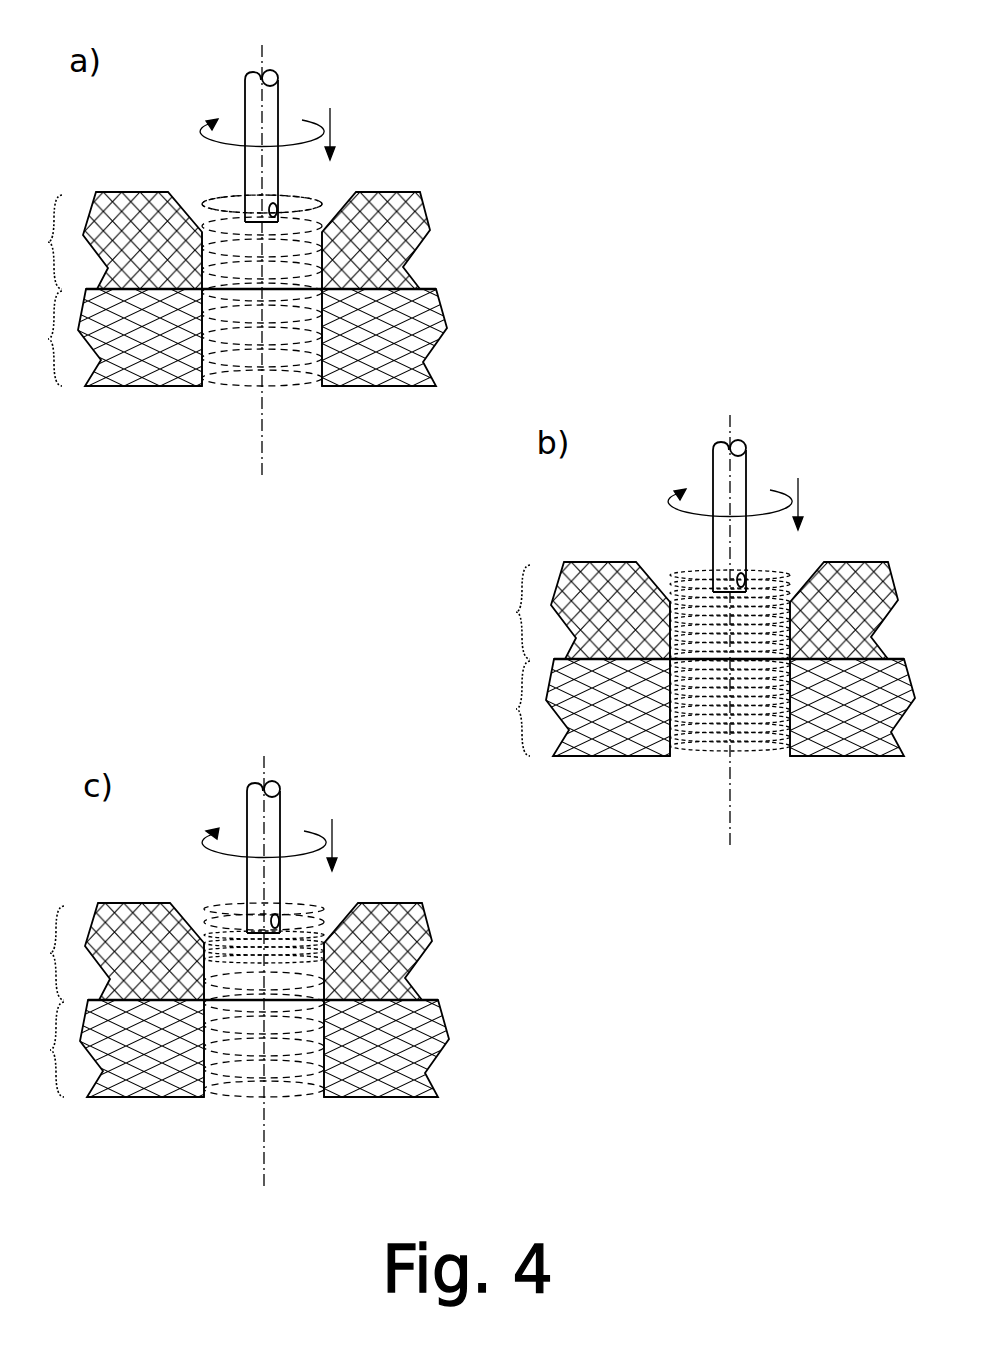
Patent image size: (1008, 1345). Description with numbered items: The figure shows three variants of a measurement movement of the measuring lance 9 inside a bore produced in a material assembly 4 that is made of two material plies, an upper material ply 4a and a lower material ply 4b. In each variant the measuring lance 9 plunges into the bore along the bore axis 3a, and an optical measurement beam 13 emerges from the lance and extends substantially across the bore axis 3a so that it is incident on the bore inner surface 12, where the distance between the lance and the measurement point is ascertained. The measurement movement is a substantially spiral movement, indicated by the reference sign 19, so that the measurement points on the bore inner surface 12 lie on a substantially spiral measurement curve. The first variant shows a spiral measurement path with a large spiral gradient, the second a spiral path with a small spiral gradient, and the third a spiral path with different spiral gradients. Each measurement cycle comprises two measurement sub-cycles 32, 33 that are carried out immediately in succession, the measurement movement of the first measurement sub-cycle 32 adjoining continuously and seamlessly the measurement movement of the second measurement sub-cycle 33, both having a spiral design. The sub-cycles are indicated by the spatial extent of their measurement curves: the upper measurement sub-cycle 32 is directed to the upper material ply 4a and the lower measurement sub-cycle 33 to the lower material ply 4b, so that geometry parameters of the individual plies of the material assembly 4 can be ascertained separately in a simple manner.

The measuring lance 9 is at (278, 100).
The spiral movement 19 is at (330, 108).
The material assembly 4 is at (432, 146).
The upper material ply 4a is at (397, 232).
The lower material ply 4b is at (413, 325).
The optical measurement beam 13 is at (327, 205).
The first measurement sub-cycle 32 is at (215, 212).
The second measurement sub-cycle 33 is at (186, 1113).
The bore inner surface 12 is at (303, 353).
The bore axis 3a is at (260, 447).